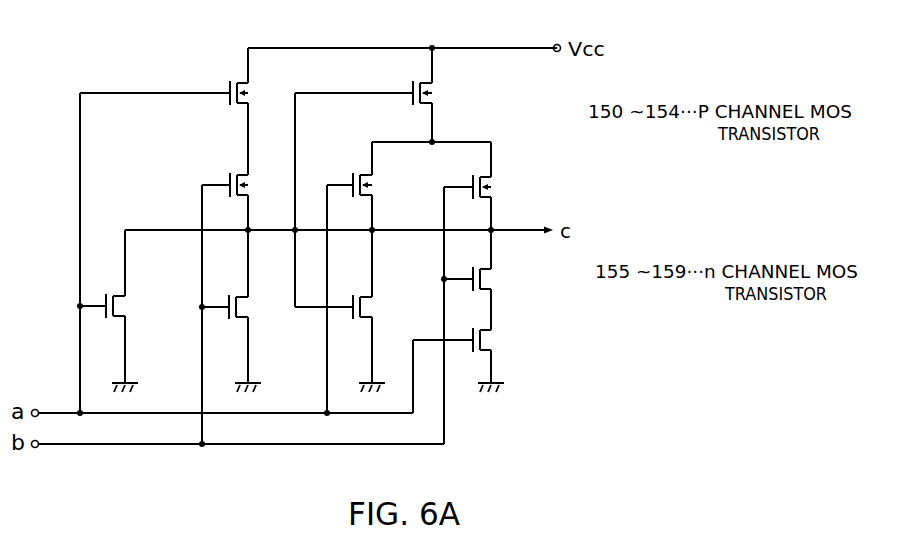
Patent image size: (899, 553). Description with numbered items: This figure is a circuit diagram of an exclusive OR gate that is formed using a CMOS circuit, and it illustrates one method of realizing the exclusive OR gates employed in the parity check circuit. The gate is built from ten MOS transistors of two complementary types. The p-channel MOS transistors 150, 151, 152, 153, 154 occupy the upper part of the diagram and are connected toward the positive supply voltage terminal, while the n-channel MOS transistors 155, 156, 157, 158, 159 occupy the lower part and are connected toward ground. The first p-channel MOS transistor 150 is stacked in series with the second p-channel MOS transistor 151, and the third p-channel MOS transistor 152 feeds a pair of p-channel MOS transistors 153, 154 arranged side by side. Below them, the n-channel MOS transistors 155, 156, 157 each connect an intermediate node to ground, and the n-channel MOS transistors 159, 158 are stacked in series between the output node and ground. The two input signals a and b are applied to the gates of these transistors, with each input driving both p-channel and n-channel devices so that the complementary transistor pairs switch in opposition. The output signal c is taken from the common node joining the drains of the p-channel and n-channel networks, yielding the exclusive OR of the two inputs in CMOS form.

The p-channel MOS transistor 150 is at (252, 88).
The p-channel MOS transistor 151 is at (253, 178).
The p-channel MOS transistor 152 is at (436, 89).
The p-channel MOS transistor 153 is at (374, 179).
The p-channel MOS transistor 154 is at (494, 179).
The n-channel MOS transistor 155 is at (124, 306).
The n-channel MOS transistor 156 is at (250, 307).
The n-channel MOS transistor 157 is at (368, 307).
The n-channel MOS transistor 158 is at (487, 338).
The n-channel MOS transistor 159 is at (487, 278).